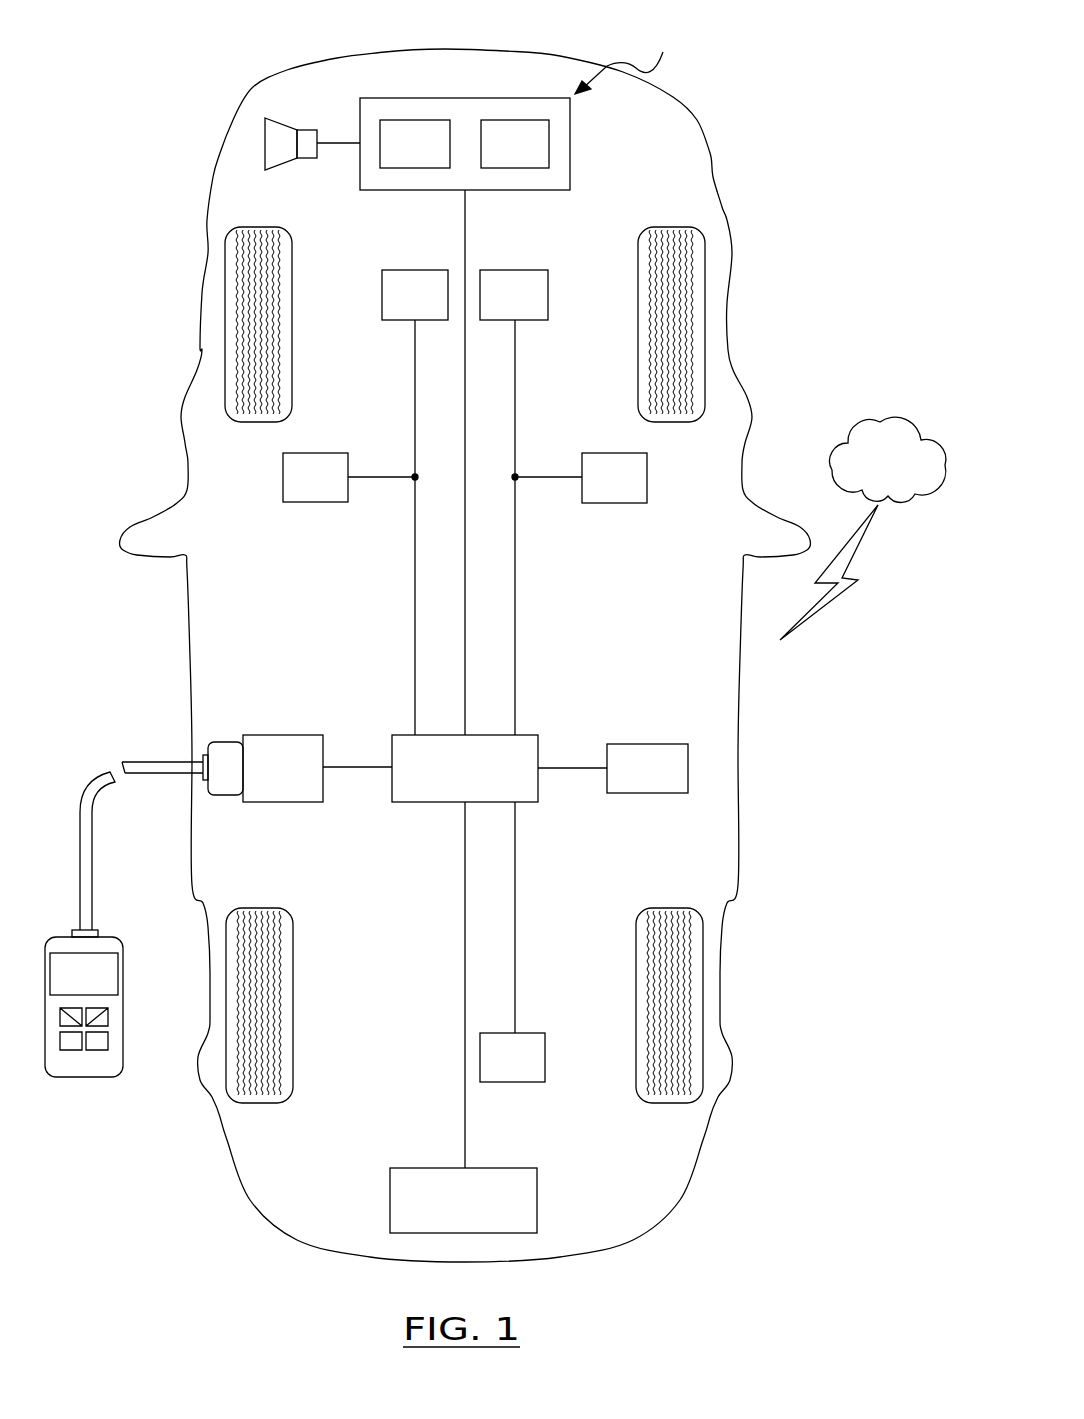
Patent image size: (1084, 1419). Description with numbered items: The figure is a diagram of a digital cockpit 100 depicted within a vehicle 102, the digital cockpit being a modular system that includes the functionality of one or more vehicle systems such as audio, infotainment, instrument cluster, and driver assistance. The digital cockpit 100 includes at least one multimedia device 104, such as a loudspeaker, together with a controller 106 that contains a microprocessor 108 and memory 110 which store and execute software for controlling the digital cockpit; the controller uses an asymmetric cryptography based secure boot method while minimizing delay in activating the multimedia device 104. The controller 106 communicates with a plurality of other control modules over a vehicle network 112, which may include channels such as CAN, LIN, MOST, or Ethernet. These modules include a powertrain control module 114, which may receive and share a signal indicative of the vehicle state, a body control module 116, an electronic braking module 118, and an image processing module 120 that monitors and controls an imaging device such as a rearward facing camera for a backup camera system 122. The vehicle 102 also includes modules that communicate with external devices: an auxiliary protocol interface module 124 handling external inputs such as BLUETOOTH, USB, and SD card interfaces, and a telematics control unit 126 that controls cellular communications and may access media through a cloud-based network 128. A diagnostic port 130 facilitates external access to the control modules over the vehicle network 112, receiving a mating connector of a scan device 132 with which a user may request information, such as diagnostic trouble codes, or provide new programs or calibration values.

The digital cockpit 100 is at (630, 57).
The vehicle 102 is at (712, 155).
The multimedia device 104 is at (281, 117).
The controller 106 is at (442, 101).
The microprocessor 108 is at (415, 144).
The memory 110 is at (515, 144).
The vehicle network 112 is at (465, 768).
The powertrain control module (PCM) 114 is at (407, 270).
The body control module (BCM) 116 is at (303, 503).
The electronic braking module (EBM) 118 is at (530, 270).
The image processing module (IPM) 120 is at (623, 503).
The backup camera system 122 is at (400, 1235).
The auxiliary protocol interface module (APIM) 124 is at (652, 743).
The telematics control unit (TCU) 126 is at (533, 1083).
The cloud-based network 128 is at (917, 417).
The diagnostic port 130 is at (282, 735).
The scan device 132 is at (85, 1077).